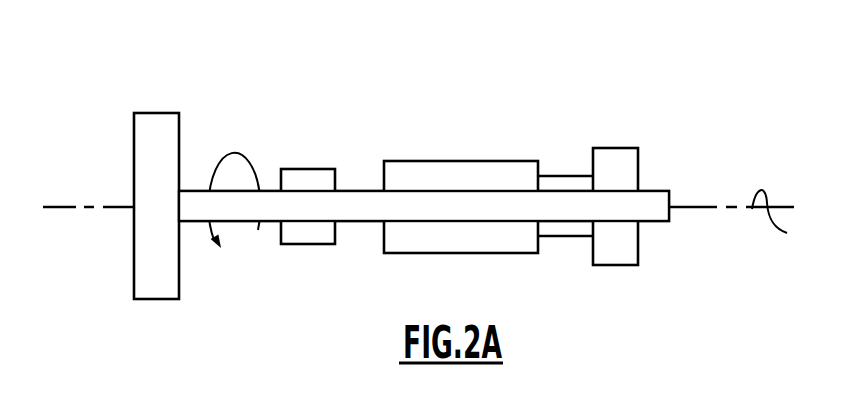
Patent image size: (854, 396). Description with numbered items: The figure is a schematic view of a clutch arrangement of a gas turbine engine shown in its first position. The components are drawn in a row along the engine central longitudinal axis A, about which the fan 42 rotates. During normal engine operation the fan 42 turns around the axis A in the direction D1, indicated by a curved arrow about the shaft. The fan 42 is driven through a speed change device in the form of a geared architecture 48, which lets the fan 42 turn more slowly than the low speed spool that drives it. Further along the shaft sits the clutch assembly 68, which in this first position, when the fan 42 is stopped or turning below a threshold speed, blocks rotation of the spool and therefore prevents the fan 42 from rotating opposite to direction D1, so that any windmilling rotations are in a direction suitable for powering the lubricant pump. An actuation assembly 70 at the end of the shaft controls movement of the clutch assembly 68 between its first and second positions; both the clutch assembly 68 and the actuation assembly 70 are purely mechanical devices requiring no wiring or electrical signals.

The fan 42 is at (173, 152).
The geared architecture 48 is at (320, 218).
The clutch assembly 68 is at (443, 121).
The actuation assembly 70 is at (637, 99).
The engine central longitudinal axis A is at (779, 221).
The direction of fan rotation D1 is at (235, 223).